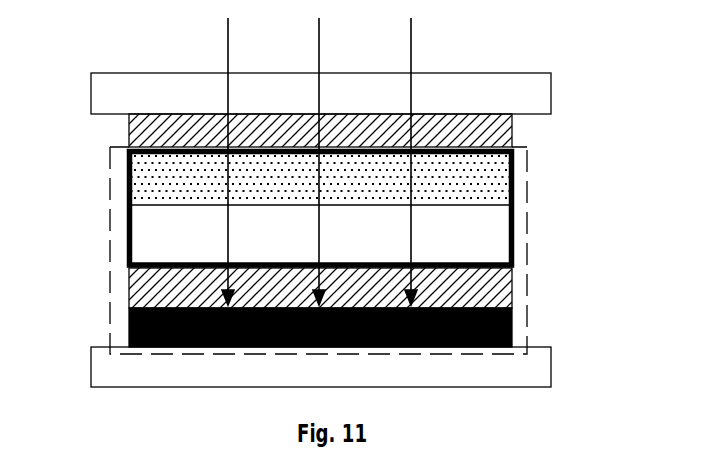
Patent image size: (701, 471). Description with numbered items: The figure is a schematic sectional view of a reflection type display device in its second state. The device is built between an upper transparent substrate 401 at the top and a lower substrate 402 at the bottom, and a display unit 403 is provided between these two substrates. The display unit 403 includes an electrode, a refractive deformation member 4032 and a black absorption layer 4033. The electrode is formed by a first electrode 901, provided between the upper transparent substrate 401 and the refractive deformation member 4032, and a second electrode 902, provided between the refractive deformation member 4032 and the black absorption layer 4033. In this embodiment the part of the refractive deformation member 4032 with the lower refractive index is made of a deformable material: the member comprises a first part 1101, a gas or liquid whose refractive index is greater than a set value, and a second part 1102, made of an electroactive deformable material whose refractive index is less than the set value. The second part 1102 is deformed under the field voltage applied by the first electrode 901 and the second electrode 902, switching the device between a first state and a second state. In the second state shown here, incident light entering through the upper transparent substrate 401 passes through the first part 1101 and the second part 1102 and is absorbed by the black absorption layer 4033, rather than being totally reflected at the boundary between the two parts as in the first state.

The upper transparent substrate 401 is at (523, 97).
The lower substrate 402 is at (543, 375).
The display unit 403 is at (518, 298).
The refractive deformation member 4032 is at (128, 228).
The black absorption layer 4033 is at (512, 325).
The first electrode 901 is at (430, 123).
The second electrode 902 is at (137, 297).
The first part 1101 is at (500, 200).
The second part 1102 is at (500, 248).